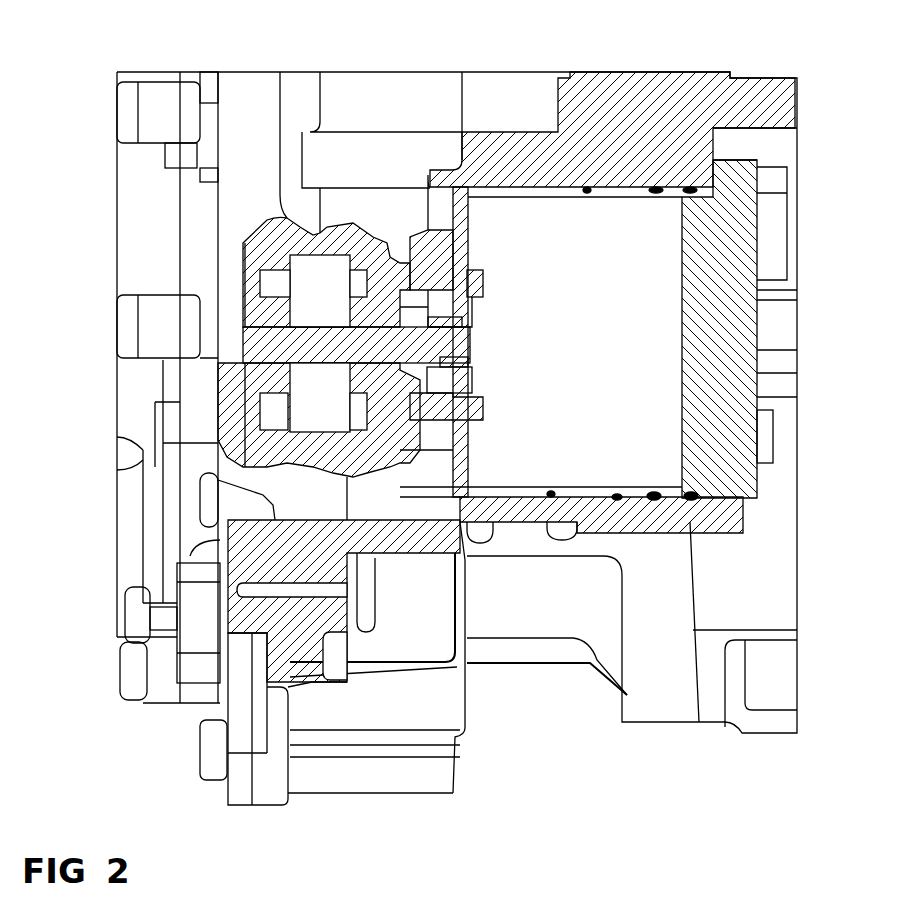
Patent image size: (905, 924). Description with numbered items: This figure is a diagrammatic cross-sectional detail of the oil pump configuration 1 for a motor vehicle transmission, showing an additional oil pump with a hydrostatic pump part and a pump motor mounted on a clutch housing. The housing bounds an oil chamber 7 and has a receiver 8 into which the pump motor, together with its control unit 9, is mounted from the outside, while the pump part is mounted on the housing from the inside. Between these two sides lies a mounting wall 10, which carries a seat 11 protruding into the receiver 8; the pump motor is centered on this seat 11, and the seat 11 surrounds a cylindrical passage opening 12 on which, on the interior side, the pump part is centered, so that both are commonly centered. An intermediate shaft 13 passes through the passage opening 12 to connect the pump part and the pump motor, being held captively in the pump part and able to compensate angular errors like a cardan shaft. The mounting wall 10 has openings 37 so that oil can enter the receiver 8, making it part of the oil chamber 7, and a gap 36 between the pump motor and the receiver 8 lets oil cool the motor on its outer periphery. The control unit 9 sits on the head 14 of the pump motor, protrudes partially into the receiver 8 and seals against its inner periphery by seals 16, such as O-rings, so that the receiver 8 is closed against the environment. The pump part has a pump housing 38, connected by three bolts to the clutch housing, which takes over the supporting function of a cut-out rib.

The oil pump configuration 1 is at (461, 514).
The oil chamber 7 is at (523, 193).
The receiver 8 is at (622, 498).
The control unit 9 is at (733, 302).
The mounting wall 10 is at (428, 246).
The seat 11 is at (472, 283).
The passage opening 12 is at (472, 383).
The intermediate shaft 13 is at (453, 367).
The head 14 is at (680, 410).
The seals 16 is at (660, 497).
The gap 36 is at (587, 190).
The openings 37 is at (470, 478).
The pump housing 38 is at (257, 447).